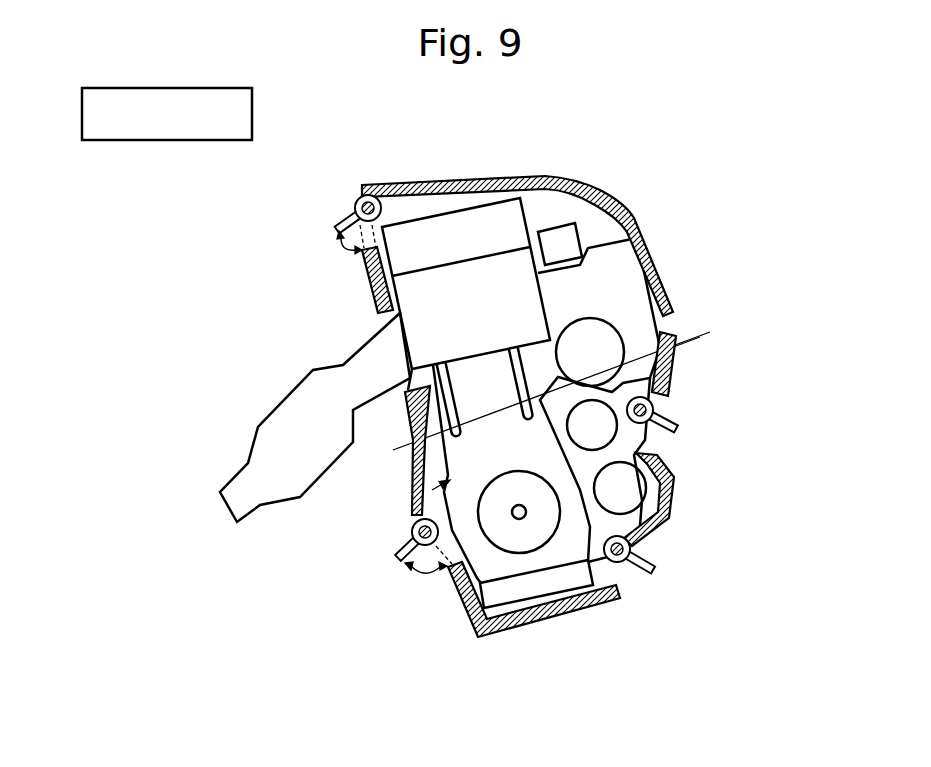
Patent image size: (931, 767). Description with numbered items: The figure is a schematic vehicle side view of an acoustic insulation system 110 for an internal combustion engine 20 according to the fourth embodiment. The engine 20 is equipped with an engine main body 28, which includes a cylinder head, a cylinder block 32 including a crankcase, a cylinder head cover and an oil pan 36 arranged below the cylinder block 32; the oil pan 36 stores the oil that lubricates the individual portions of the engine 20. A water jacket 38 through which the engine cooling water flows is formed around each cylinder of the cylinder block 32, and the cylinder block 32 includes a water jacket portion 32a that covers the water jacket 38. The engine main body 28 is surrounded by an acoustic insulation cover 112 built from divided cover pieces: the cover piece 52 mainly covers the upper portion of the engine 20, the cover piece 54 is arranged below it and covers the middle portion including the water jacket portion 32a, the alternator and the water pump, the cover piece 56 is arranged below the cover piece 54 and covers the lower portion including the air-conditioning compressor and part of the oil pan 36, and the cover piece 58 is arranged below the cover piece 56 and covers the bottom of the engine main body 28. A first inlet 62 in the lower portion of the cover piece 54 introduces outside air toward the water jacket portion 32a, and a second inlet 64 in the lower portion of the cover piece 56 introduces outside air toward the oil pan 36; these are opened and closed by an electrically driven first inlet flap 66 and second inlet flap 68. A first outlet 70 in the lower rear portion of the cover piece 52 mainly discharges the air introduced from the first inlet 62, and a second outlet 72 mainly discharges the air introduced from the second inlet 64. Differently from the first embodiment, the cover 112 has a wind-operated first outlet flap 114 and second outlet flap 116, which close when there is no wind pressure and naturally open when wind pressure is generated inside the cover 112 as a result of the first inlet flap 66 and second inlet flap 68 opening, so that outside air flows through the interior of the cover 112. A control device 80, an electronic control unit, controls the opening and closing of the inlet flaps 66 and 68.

The internal combustion engine 20 is at (352, 323).
The engine main body 28 is at (538, 208).
The cylinder block 32 is at (410, 491).
The water jacket portion 32a is at (698, 323).
The oil pan 36 is at (508, 590).
The water jacket 38 is at (534, 403).
The cover piece 52 is at (670, 275).
The cover piece 54 is at (676, 372).
The cover piece 56 is at (672, 508).
The cover piece 58 is at (570, 612).
The first inlet 62 is at (642, 440).
The second inlet 64 is at (610, 573).
The first inlet flap 66 is at (676, 420).
The second inlet flap 68 is at (650, 565).
The first outlet 70 is at (333, 222).
The second outlet 72 is at (400, 558).
The control device 80 is at (254, 110).
The acoustic insulation system 110 is at (724, 178).
The acoustic insulation cover 112 is at (633, 180).
The first outlet flap 114 is at (338, 232).
The second outlet flap 116 is at (388, 566).